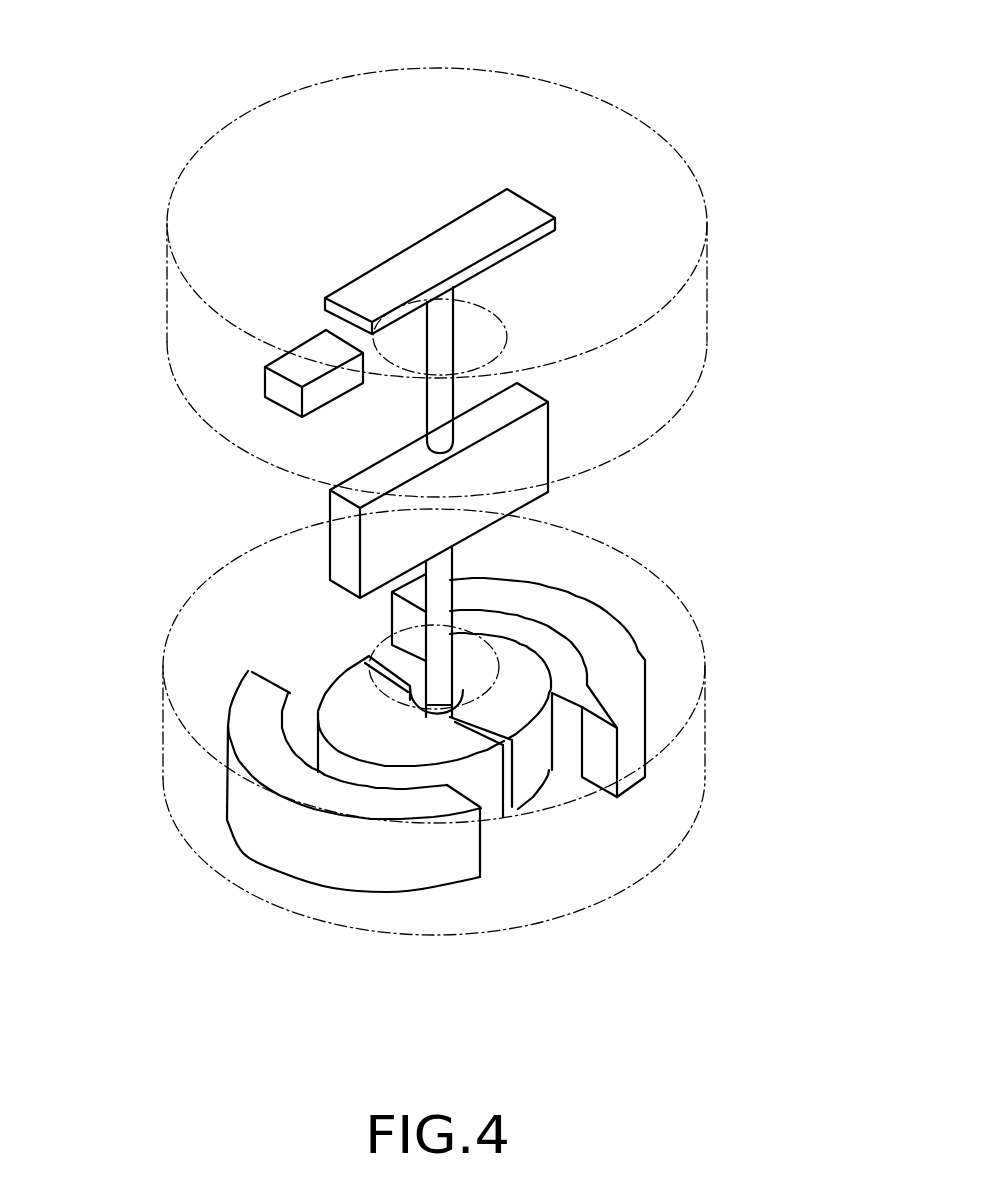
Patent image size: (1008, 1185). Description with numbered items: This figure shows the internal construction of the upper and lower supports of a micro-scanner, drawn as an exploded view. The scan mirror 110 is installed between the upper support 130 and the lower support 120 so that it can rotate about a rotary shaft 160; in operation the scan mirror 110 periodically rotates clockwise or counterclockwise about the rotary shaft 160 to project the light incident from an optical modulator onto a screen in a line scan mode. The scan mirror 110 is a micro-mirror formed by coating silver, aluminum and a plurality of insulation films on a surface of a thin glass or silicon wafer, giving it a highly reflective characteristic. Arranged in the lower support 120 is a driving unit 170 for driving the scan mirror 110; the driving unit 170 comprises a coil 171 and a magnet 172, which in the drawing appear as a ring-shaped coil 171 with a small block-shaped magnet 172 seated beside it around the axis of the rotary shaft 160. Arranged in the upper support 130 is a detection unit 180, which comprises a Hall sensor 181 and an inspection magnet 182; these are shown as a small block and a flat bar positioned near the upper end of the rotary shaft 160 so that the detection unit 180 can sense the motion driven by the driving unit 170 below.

The scan mirror 110 is at (525, 457).
The lower support 120 is at (195, 647).
The upper support 130 is at (623, 148).
The rotary shaft 160 is at (433, 412).
The driving unit 170 is at (838, 643).
The coil 171 is at (533, 682).
The magnet 172 is at (628, 733).
The detection unit 180 is at (72, 282).
The Hall sensor 181 is at (302, 378).
The inspection magnet 182 is at (357, 286).